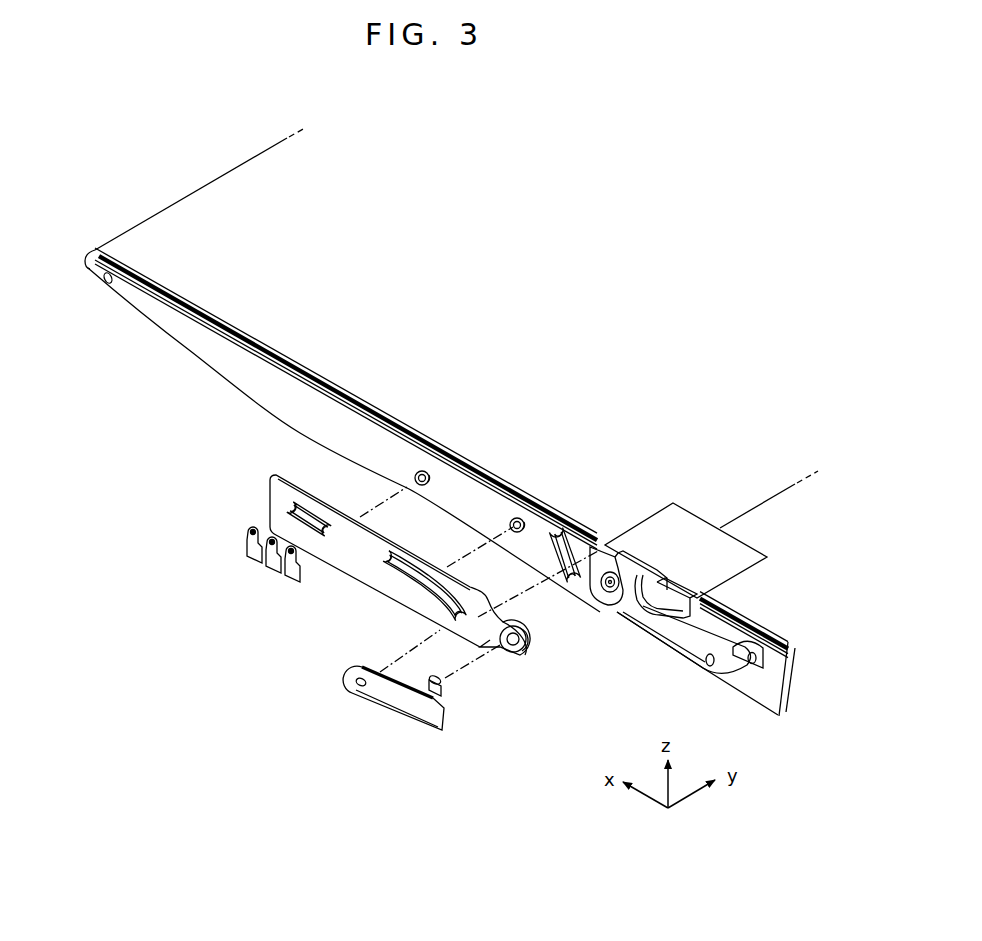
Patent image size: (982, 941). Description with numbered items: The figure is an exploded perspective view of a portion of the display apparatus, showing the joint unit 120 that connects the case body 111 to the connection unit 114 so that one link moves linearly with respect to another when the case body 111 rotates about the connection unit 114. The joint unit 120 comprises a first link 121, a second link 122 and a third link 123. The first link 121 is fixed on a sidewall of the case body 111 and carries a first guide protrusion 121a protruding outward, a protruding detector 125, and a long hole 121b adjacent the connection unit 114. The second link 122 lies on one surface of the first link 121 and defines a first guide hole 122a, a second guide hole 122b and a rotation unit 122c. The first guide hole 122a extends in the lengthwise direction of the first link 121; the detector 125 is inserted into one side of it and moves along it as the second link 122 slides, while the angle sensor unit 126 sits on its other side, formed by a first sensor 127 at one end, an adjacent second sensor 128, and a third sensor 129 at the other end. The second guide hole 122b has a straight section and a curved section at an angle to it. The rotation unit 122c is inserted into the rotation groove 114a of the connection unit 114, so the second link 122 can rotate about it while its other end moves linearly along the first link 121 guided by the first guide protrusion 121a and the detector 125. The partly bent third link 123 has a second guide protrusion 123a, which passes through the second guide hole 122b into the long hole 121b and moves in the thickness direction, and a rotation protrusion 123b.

The case body 111 is at (133, 243).
The first link 121 is at (191, 353).
The detector 125 is at (424, 470).
The first guide protrusion 121a is at (517, 518).
The long hole 121b is at (557, 516).
The connection unit 114 is at (667, 556).
The rotation groove 114a is at (607, 593).
The joint unit 120 is at (234, 670).
The second link 122 is at (376, 579).
The first guide hole 122a is at (298, 512).
The second guide hole 122b is at (410, 571).
The rotation unit 122c is at (526, 660).
The angle sensor unit 126 is at (241, 586).
The first sensor 127 is at (280, 586).
The second sensor 128 is at (270, 562).
The third sensor 129 is at (252, 550).
The third link 123 is at (383, 731).
The second guide protrusion 123a is at (352, 667).
The rotation protrusion 123b is at (443, 686).